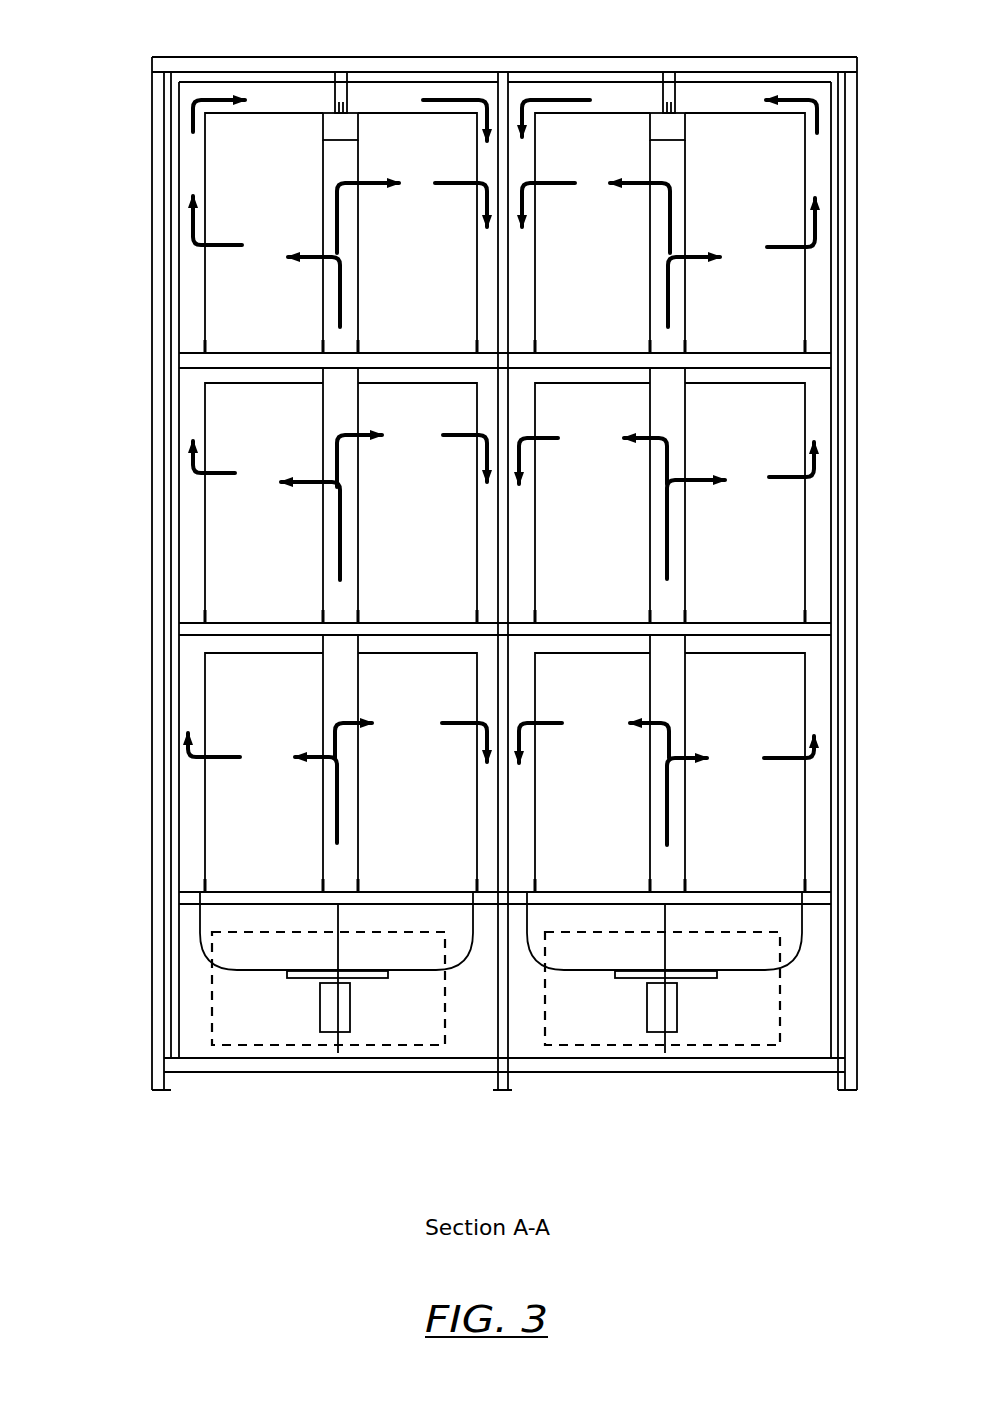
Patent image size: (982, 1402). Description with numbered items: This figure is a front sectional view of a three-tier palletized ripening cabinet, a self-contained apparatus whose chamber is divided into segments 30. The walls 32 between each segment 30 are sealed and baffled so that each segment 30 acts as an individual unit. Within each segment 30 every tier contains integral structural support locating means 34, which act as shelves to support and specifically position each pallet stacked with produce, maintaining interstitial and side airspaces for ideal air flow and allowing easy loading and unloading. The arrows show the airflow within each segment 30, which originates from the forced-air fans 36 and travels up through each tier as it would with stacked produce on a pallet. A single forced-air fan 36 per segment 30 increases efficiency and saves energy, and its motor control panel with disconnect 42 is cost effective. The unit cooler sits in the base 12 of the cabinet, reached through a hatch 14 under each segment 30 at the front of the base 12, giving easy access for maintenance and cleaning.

The base 12 is at (187, 1008).
The hatch 14 is at (278, 1045).
The segment 30 is at (282, 132).
The wall 32 is at (487, 337).
The integral structural support locating means 34 is at (443, 622).
The forced-air fan 36 is at (390, 975).
The motor control panel with disconnect 42 is at (328, 1020).